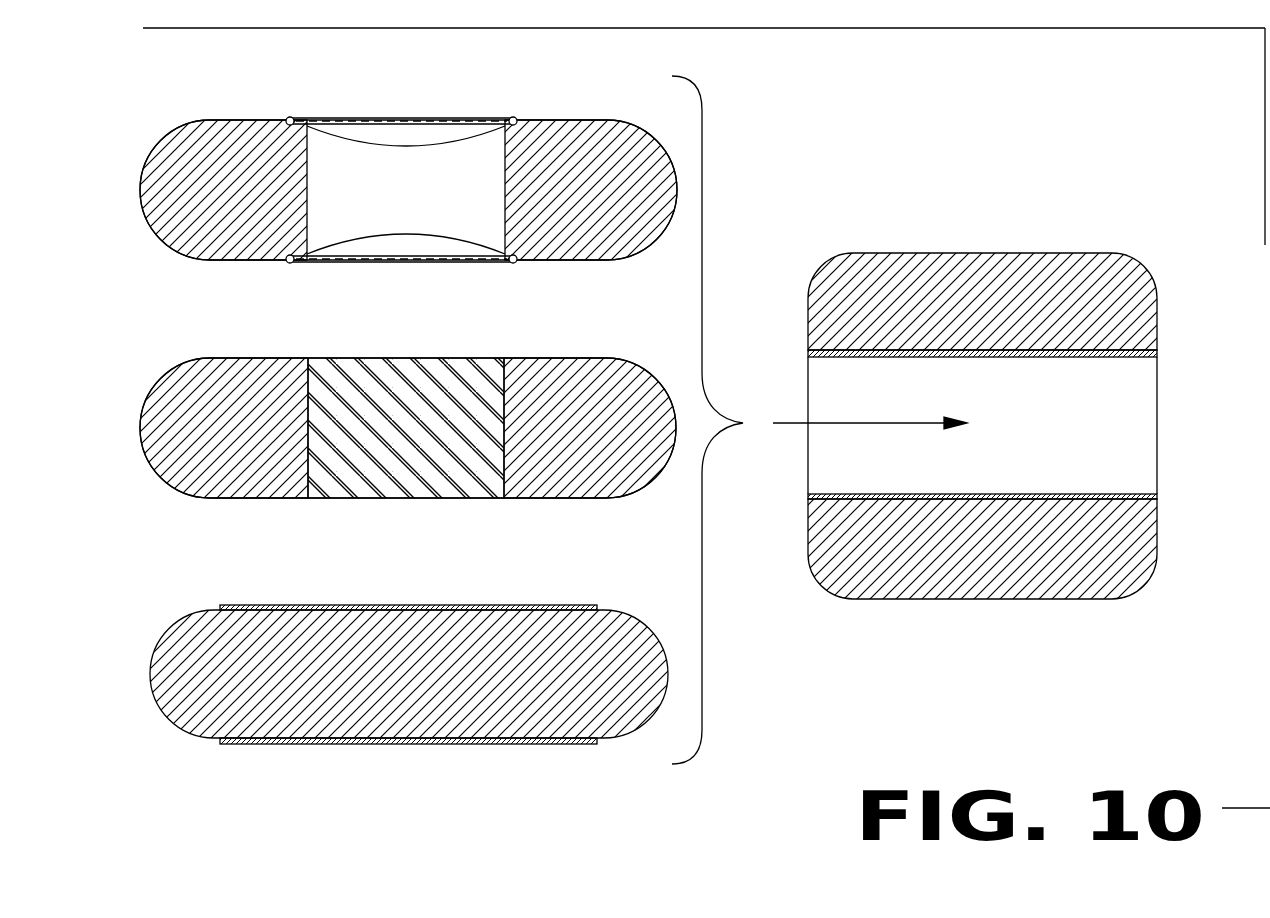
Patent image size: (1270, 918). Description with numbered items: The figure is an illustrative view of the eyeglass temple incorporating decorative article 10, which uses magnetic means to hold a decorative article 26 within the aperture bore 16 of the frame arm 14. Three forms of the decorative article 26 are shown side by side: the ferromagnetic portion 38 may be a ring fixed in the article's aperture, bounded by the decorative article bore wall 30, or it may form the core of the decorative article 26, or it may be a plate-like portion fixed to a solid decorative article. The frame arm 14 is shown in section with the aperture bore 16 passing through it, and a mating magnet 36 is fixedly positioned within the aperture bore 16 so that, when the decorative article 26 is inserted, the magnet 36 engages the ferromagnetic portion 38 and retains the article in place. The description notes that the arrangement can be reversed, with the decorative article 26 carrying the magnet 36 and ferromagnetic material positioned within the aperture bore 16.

The eyeglass temple incorporating decorative article 10 is at (1066, 160).
The frame arm 14 is at (895, 260).
The aperture bore 16 is at (1118, 395).
The decorative article 26 is at (213, 133).
The decorative article bore wall 30 is at (845, 455).
The magnet 36 is at (988, 356).
The ferromagnetic portion 38 is at (493, 117).